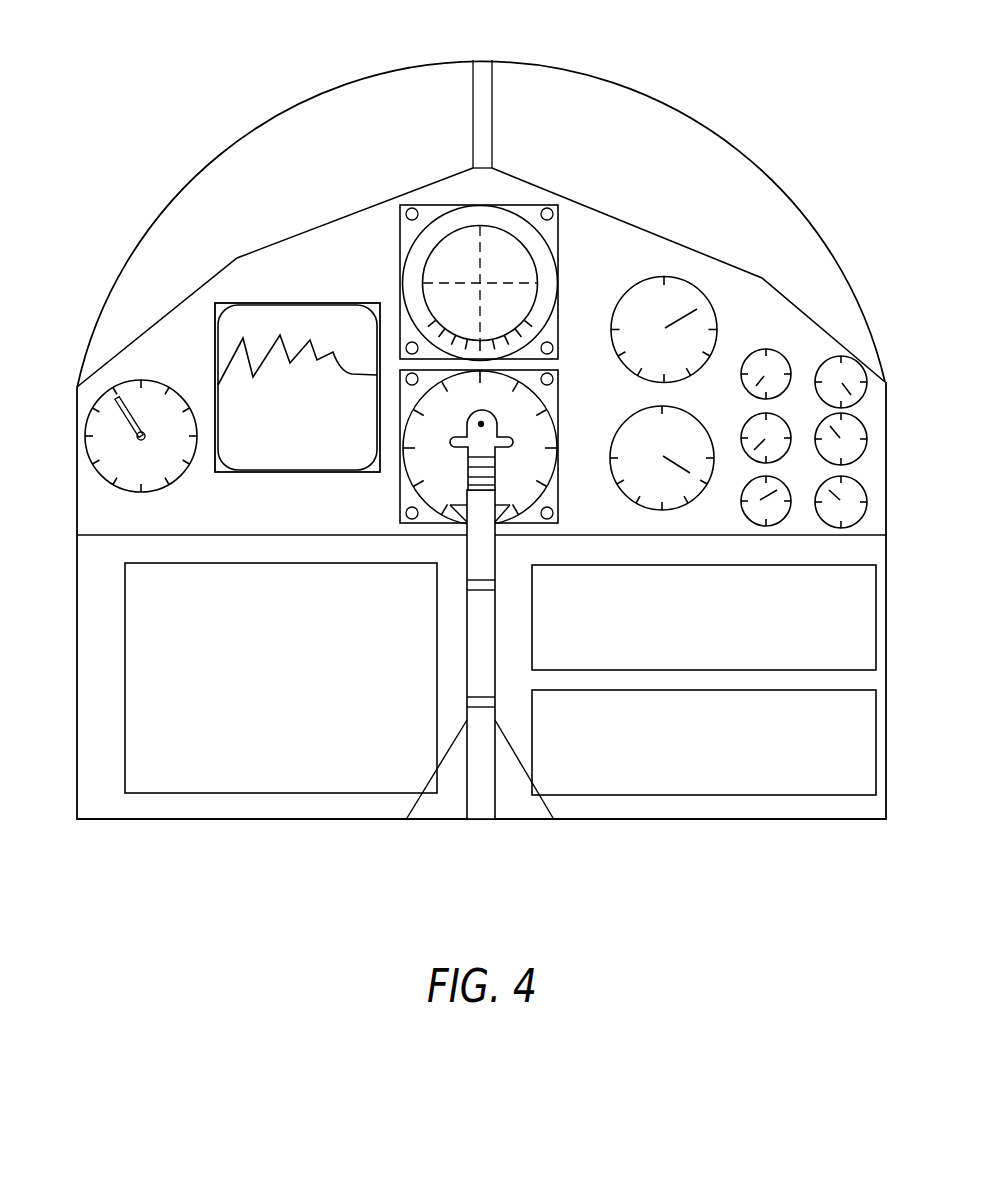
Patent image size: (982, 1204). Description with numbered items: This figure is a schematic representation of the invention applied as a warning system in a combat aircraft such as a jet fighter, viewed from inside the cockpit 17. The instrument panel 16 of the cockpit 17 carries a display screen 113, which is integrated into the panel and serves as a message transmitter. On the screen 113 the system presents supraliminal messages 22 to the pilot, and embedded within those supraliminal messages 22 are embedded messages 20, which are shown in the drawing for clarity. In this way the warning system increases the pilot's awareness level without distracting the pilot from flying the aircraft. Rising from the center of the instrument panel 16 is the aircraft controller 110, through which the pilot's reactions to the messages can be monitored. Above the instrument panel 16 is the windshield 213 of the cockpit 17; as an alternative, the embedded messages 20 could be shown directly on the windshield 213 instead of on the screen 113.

The cockpit 17 is at (522, 60).
The windshield 213 is at (295, 125).
The instrument panel 16 is at (580, 248).
The screen 113 is at (213, 307).
The supraliminal messages 22 is at (242, 354).
The embedded messages 20 is at (275, 388).
The aircraft controller 110 is at (483, 565).